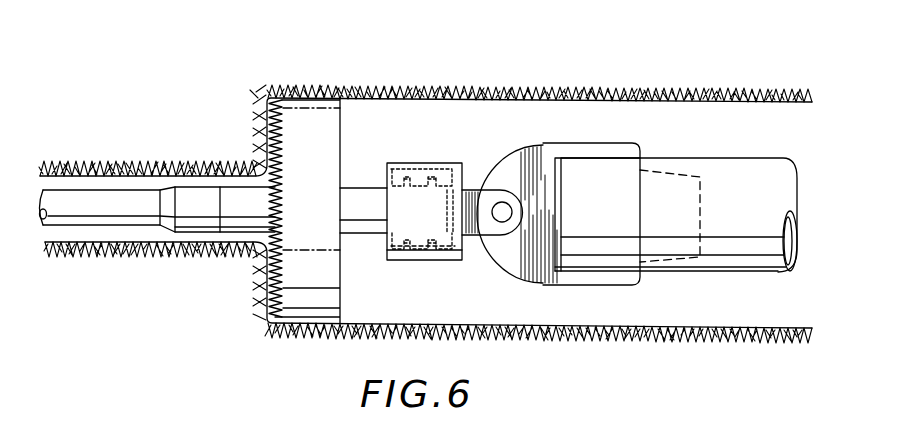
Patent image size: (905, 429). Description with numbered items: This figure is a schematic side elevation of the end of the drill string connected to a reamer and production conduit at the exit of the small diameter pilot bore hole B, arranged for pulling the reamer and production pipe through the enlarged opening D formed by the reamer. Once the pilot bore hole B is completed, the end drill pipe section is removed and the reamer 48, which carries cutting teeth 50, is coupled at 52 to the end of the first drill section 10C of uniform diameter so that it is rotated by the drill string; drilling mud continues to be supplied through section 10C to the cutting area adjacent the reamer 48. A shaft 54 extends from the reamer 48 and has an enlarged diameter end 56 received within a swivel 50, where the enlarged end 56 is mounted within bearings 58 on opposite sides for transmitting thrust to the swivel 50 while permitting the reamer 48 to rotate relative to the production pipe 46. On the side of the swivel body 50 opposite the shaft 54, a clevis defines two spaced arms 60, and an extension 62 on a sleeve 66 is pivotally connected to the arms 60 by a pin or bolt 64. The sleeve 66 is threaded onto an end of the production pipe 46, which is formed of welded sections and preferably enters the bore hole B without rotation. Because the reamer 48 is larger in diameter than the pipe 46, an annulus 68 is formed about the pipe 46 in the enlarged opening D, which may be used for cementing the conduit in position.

The first drill section 10C is at (120, 220).
The pilot bore hole B is at (79, 176).
The coupling 52 is at (198, 192).
The swivel 50 is at (421, 164).
The reamer 48 is at (307, 114).
The shaft 54 is at (360, 222).
The enlarged diameter end 56 is at (422, 261).
The bearings 58 is at (402, 172).
The spaced arms 60 is at (503, 236).
The pin or bolt 64 is at (502, 202).
The extension 62 is at (548, 145).
The production pipe 46 is at (716, 157).
The sleeve 66 is at (596, 244).
The annulus 68 is at (657, 314).
The enlarged opening D is at (443, 322).